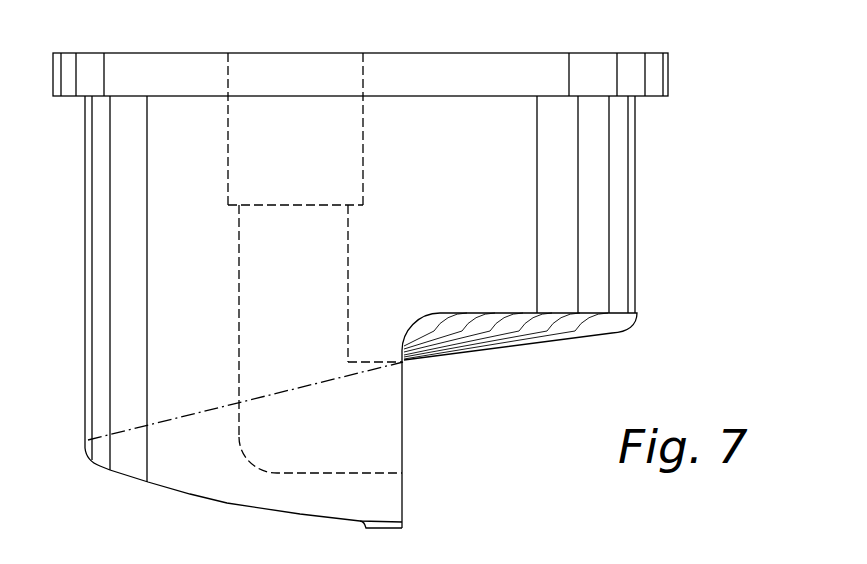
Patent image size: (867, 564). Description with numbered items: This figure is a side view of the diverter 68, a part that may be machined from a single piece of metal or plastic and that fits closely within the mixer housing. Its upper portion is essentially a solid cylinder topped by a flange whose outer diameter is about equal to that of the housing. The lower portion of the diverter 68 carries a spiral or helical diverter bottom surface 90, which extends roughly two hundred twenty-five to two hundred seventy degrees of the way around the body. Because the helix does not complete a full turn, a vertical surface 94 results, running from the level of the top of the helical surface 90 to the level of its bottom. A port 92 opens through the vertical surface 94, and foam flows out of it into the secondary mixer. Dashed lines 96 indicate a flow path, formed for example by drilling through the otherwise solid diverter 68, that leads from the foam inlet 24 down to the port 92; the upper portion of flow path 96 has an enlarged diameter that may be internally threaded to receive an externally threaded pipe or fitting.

The foam inlet 24 is at (273, 53).
The diverter 68 is at (485, 220).
The helical diverter bottom surface 90 is at (525, 341).
The port 92 is at (403, 413).
The vertical surface 94 is at (403, 492).
The flow path 96 is at (239, 372).